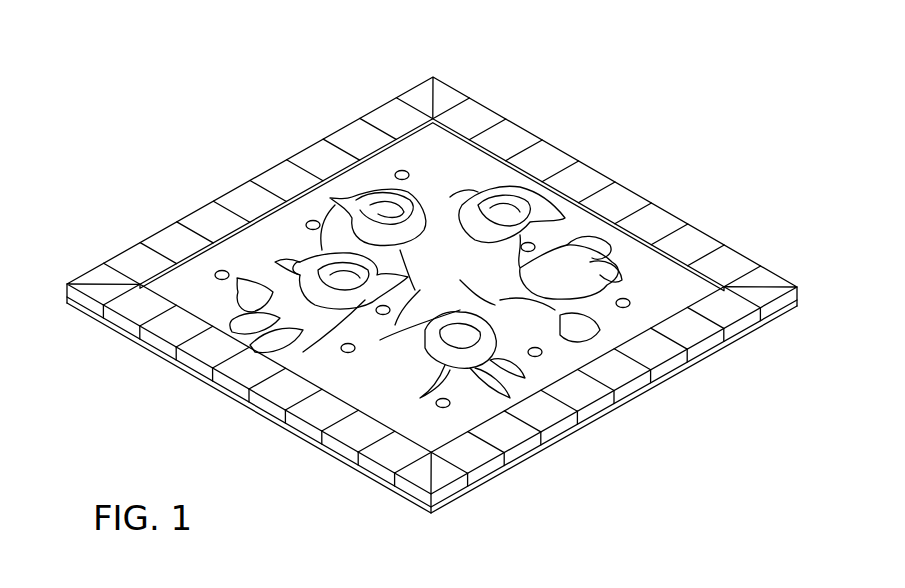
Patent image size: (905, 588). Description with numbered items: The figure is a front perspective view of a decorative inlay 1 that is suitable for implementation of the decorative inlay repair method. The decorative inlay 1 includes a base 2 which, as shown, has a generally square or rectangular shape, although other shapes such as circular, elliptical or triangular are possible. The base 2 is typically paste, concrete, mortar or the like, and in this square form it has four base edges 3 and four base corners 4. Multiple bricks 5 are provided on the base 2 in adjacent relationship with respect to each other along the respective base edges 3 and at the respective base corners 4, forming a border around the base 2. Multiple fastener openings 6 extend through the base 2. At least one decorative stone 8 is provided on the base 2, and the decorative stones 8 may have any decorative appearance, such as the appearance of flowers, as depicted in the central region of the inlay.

The decorative inlay 1 is at (490, 78).
The base 2 is at (207, 307).
The base edges 3 is at (212, 182).
The base corners 4 is at (67, 303).
The bricks 5 is at (312, 158).
The fastener openings 6 is at (402, 171).
The decorative stone 8 is at (593, 252).